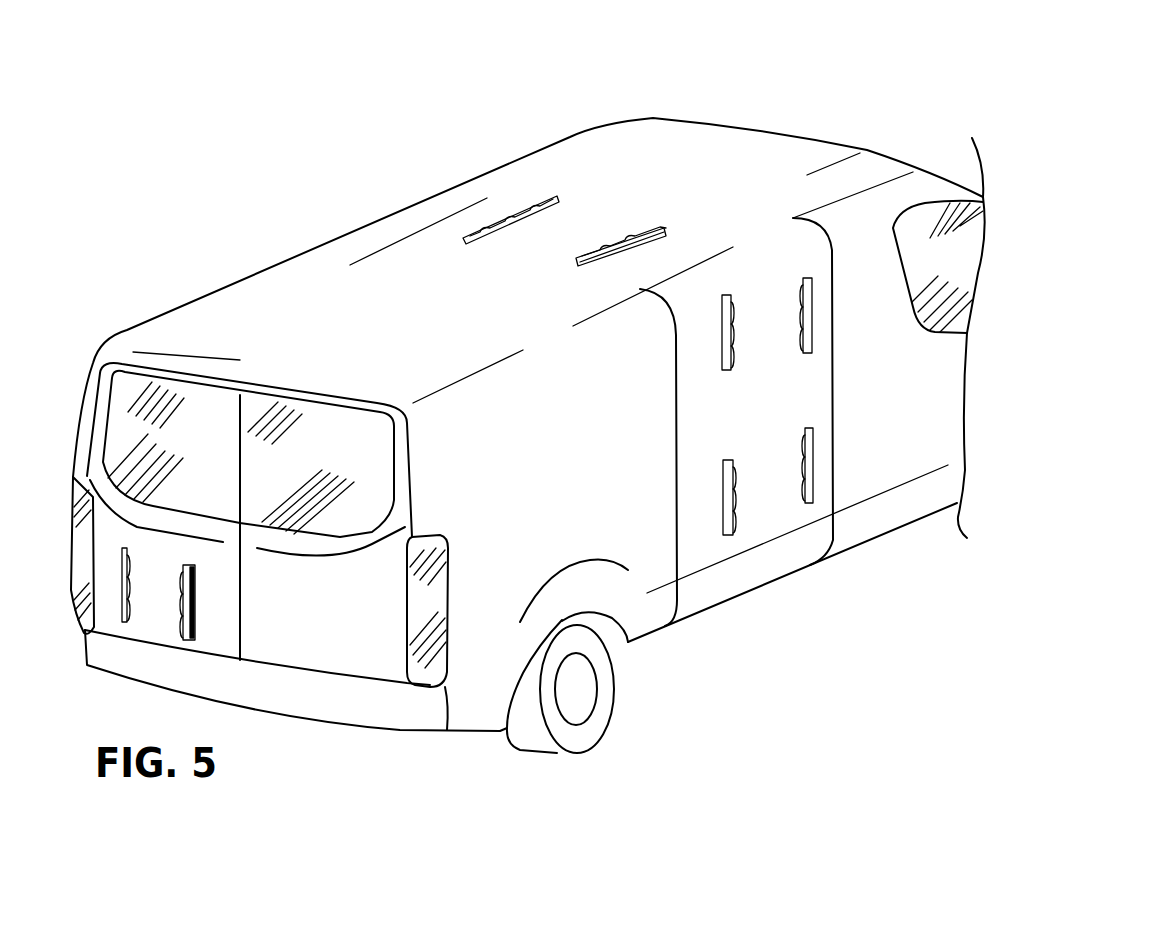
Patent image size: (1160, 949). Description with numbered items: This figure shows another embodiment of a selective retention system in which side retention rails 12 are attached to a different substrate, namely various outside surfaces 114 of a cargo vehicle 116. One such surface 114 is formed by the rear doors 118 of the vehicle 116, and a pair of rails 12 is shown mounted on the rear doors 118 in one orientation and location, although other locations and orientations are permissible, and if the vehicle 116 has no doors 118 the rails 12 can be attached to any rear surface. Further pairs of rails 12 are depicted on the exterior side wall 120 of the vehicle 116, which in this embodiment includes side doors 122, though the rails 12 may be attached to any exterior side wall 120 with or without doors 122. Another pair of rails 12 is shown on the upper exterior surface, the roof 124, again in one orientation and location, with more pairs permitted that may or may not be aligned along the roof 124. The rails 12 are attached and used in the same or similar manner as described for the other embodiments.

The side retention rail 12 is at (125, 622).
The outside surface 114 is at (747, 150).
The vehicle 116 is at (572, 136).
The rear door 118 is at (270, 443).
The exterior side wall 120 is at (533, 486).
The side door 122 is at (703, 593).
The roof 124 is at (353, 253).